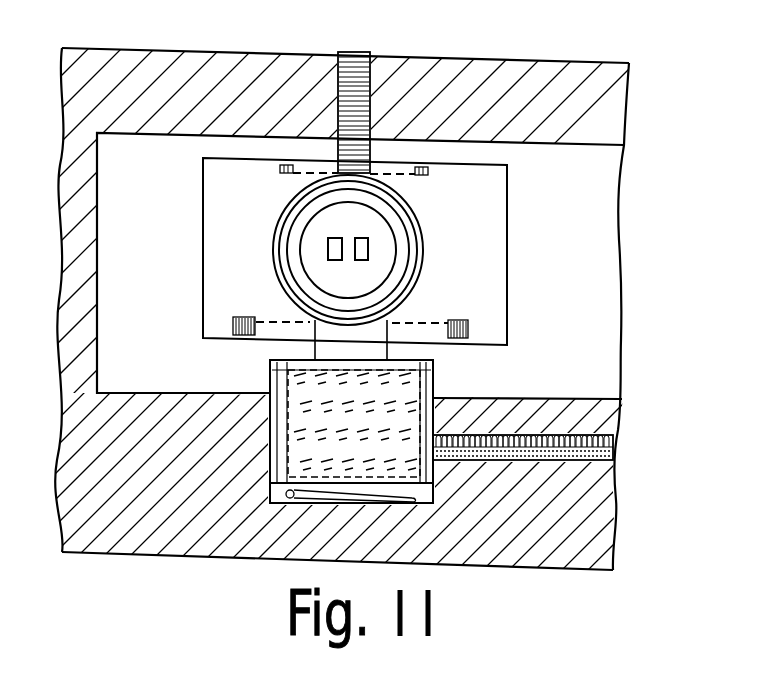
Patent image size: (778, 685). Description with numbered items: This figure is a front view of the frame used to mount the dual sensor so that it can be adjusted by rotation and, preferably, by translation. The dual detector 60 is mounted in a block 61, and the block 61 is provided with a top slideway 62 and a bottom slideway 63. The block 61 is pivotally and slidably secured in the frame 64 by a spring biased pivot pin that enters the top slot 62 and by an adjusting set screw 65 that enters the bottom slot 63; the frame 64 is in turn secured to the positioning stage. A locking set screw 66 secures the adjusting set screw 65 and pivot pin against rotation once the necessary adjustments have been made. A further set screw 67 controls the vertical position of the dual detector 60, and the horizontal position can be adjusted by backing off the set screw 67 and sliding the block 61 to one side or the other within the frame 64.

The dual detector 60 is at (382, 248).
The block 61 is at (477, 280).
The top slideway 62 is at (306, 173).
The bottom slideway 63 is at (270, 326).
The frame 64 is at (617, 113).
The adjusting set screw 65 is at (433, 379).
The locking set screw 66 is at (617, 441).
The set screw 67 is at (356, 52).